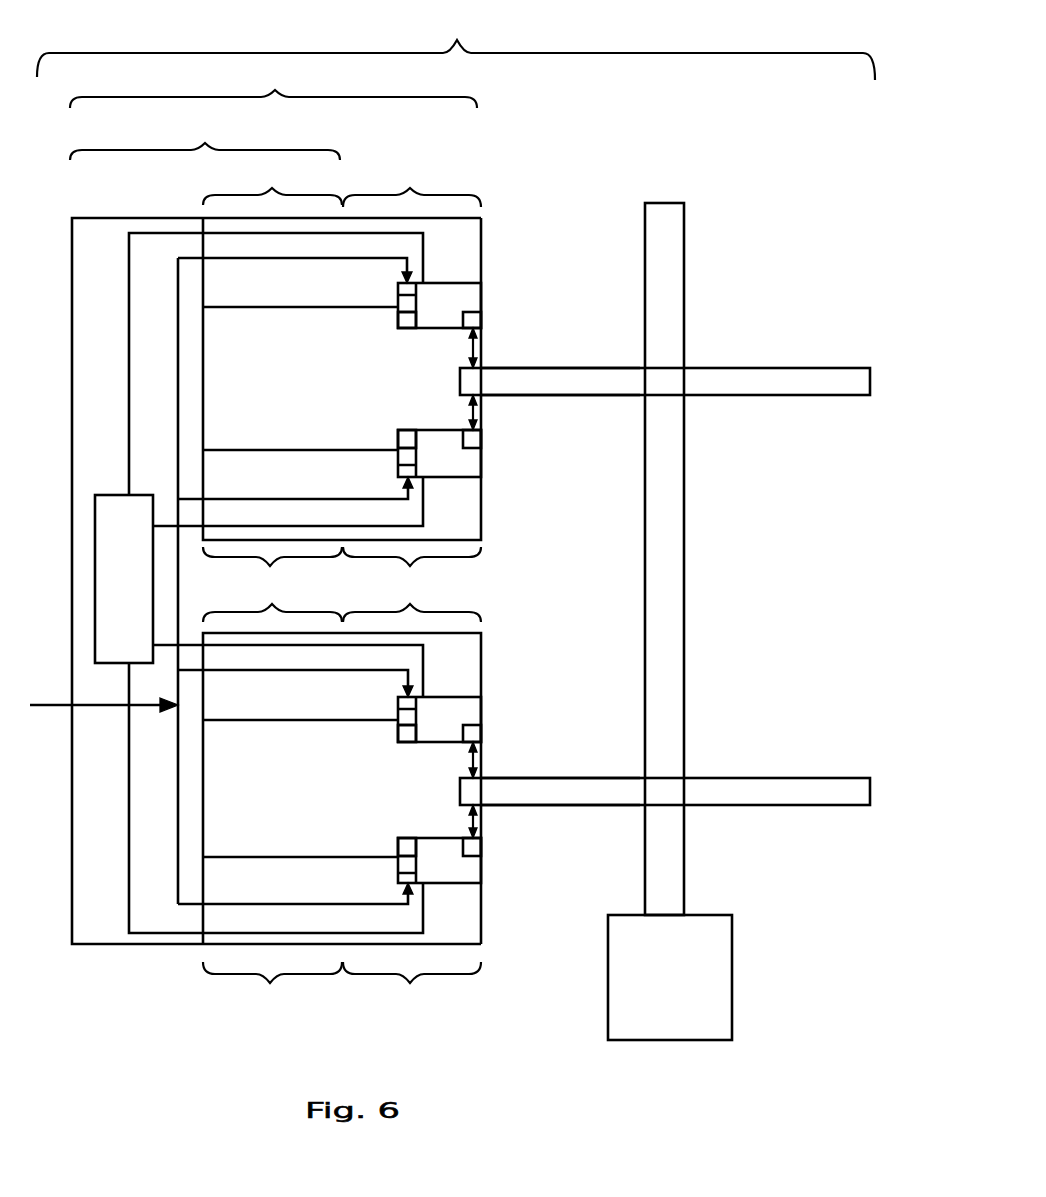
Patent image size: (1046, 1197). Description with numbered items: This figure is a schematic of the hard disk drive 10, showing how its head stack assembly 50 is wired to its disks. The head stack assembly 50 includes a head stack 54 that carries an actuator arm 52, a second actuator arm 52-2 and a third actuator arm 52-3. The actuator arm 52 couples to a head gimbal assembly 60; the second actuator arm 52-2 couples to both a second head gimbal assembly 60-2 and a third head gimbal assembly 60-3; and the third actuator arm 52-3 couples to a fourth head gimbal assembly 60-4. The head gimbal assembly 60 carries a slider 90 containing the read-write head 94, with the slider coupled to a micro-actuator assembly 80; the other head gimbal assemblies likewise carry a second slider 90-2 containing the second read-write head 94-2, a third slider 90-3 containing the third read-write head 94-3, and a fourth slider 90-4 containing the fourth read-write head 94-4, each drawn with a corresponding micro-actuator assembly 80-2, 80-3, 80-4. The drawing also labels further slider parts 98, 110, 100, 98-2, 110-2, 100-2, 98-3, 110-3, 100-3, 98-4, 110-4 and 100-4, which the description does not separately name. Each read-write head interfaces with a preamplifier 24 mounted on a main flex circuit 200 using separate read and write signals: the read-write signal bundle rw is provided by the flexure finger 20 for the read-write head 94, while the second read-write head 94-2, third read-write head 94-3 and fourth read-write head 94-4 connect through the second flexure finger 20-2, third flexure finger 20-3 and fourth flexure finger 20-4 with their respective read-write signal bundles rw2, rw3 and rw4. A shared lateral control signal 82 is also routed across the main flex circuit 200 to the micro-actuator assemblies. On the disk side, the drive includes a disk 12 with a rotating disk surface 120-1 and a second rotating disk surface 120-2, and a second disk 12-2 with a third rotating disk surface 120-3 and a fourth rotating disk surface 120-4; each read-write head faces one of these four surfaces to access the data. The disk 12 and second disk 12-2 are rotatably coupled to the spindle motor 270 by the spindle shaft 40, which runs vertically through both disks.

The hard disk drive 10 is at (456, 47).
The head stack assembly 50 is at (273, 84).
The head stack 54 is at (205, 135).
The actuator arm 52 is at (272, 184).
The head gimbal assembly 60 is at (412, 185).
The second actuator arm 52-2 is at (272, 571).
The second head gimbal assembly 60-2 is at (412, 566).
The third head gimbal assembly 60-3 is at (412, 603).
The third actuator arm 52-3 is at (272, 986).
The fourth head gimbal assembly 60-4 is at (412, 986).
The main flex circuit 200 is at (114, 940).
The preamplifier 24 is at (124, 579).
The lateral control signal 82 is at (305, 259).
The read-write signal bundle rw is at (383, 237).
The read/write line rw2 is at (384, 526).
The read/write line rw3 is at (385, 646).
The read/write line rw4 is at (385, 933).
The flexure finger 20 is at (292, 309).
The second flexure finger 20-2 is at (297, 450).
The third flexure finger 20-3 is at (298, 721).
The fourth flexure finger 20-4 is at (297, 857).
The slider 90 is at (427, 307).
The sensor body 98 is at (439, 305).
The sensor element block 110 is at (368, 313).
The micro-actuator assembly 80 is at (383, 334).
The sensor element 100 is at (395, 318).
The read-write head 94 is at (481, 325).
The second slider 90-2 is at (429, 438).
The sensor body 98-2 is at (439, 453).
The sensor element block 110-2 is at (375, 431).
The sensor 80-2 is at (395, 413).
The sensor element 100-2 is at (398, 441).
The second read-write head 94-2 is at (481, 436).
The third slider 90-3 is at (429, 725).
The sensor body 98-3 is at (439, 719).
The sensor element block 110-3 is at (375, 730).
The sensor 80-3 is at (395, 751).
The sensor element 100-3 is at (398, 727).
The third read-write head 94-3 is at (481, 738).
The fourth slider 90-4 is at (429, 847).
The sensor body 98-4 is at (439, 861).
The sensor element block 110-4 is at (375, 841).
The sensor 80-4 is at (395, 822).
The sensor element 100-4 is at (398, 851).
The fourth read-write head 94-4 is at (481, 844).
The spindle shaft 40 is at (665, 203).
The disk 12 is at (665, 383).
The second disk 12-2 is at (665, 793).
The rotating disk surface 120-1 is at (562, 368).
The second rotating disk surface 120-2 is at (561, 396).
The third rotating disk surface 120-3 is at (562, 778).
The fourth rotating disk surface 120-4 is at (561, 806).
The spindle motor 270 is at (732, 944).